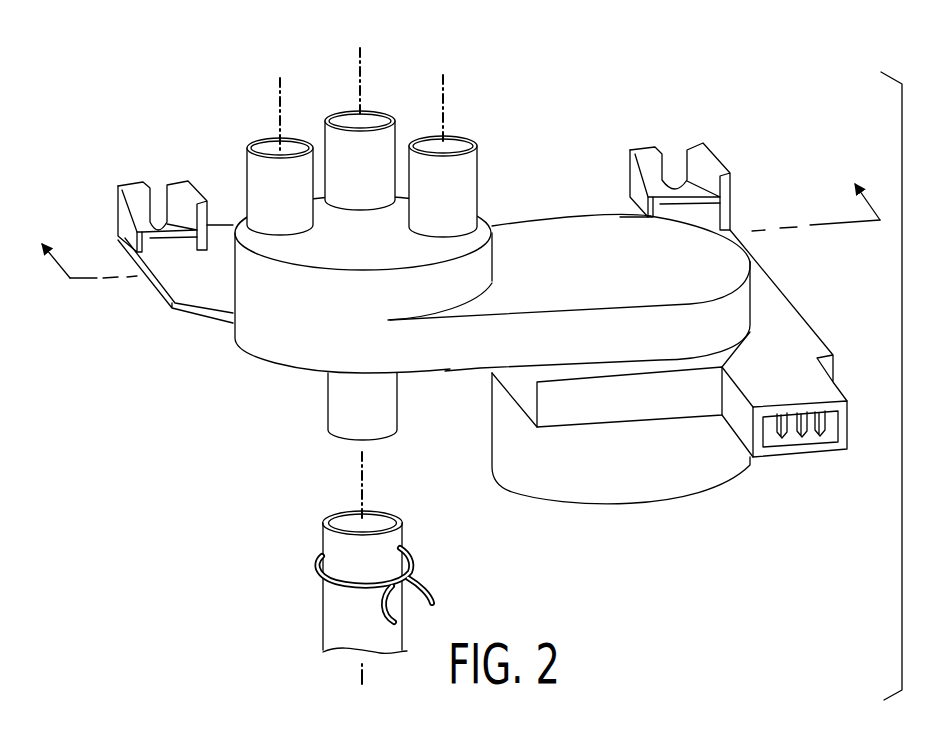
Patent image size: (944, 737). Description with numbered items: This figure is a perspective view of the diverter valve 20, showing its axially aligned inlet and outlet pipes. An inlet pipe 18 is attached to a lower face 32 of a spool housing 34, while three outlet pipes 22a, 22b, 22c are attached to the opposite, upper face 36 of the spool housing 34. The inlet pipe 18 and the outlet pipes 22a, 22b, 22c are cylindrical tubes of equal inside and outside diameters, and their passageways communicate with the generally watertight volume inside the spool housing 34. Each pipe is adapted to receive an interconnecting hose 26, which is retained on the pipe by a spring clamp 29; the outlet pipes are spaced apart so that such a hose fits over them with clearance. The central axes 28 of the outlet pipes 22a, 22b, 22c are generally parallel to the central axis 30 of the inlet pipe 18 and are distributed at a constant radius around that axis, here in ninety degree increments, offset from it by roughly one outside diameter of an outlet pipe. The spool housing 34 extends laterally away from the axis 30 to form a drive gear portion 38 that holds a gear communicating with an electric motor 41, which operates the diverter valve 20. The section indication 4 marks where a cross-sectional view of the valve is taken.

The section line 4- 4 is at (450, 220).
The inlet pipe 18 is at (340, 414).
The diverter valve 20 is at (482, 258).
The outlet pipe 22a is at (253, 178).
The outlet pipe 22b is at (339, 139).
The outlet pipe 22c is at (467, 170).
The interconnecting hose 26 is at (332, 608).
The central axis 28 is at (282, 112).
The spring clamp 29 is at (407, 562).
The central axis 30 is at (360, 668).
The lower face 32 is at (302, 373).
The spool housing 34 is at (317, 315).
The upper face 36 is at (400, 250).
The drive gear portion 38 is at (712, 265).
The electric motor 41 is at (510, 478).